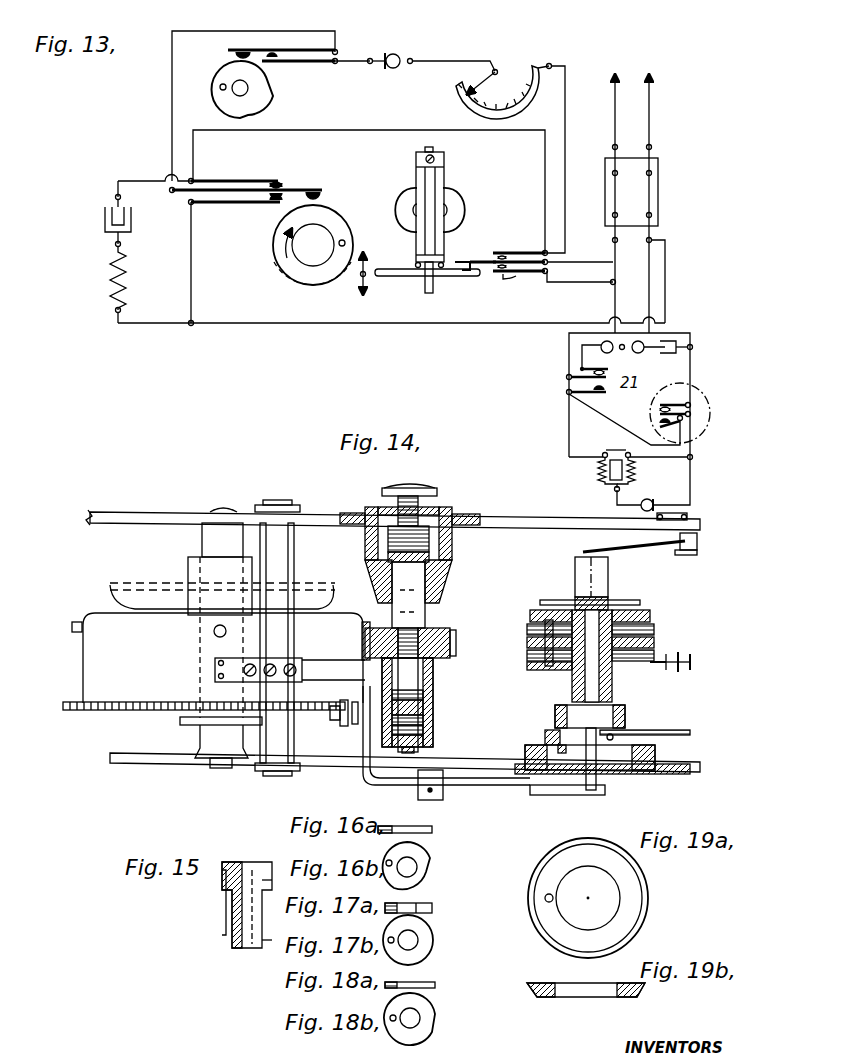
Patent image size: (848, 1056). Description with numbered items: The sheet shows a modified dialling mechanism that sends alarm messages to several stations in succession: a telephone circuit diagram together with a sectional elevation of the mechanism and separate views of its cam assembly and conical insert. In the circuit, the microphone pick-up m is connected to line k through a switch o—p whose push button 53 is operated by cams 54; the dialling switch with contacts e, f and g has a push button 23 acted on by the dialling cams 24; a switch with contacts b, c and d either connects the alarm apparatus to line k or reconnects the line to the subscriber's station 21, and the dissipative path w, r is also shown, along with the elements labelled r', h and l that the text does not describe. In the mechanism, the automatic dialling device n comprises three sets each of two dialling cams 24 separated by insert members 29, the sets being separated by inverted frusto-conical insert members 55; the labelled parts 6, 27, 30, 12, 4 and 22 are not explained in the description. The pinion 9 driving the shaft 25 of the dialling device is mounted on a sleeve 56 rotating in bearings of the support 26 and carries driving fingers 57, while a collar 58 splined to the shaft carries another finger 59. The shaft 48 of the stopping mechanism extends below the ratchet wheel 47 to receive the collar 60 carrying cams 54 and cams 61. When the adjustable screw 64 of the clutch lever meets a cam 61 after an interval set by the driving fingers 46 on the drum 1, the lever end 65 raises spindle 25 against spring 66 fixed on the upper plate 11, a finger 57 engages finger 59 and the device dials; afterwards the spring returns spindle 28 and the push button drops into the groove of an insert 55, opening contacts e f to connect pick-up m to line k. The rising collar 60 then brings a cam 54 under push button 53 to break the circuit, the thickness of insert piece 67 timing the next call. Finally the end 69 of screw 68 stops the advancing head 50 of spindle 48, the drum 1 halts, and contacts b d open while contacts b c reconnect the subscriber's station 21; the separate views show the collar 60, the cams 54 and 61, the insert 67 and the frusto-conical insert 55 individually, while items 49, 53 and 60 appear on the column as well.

In FIG. 14, the drum 1 is at (118, 630).
In FIG. 14, the rack 4 is at (62, 702).
In FIG. 14, the support 6 is at (690, 735).
In FIG. 14, the pinion 9 is at (675, 728).
In FIG. 14, the upper plate 11 is at (145, 497).
In FIG. 14, the bottom plate 12 is at (140, 765).
In FIG. 13, the subscriber's station 21 is at (466, 192).
In FIG. 13, the pivot link 22 is at (462, 278).
In FIG. 13, the push button 23 is at (318, 205).
In FIG. 14, the push button 23 is at (622, 686).
In FIG. 13, the dialling cams 24 is at (276, 282).
In FIG. 14, the dialling cams 24 is at (654, 643).
In FIG. 14, the shaft of the dialling device 25 is at (605, 598).
In FIG. 14, the support 26 is at (655, 757).
In FIG. 14, the lower plate 27 is at (560, 795).
In FIG. 14, the spindle 28 is at (650, 614).
In FIG. 14, the insert members 29 is at (654, 657).
In FIG. 14, the insulating disc 30 is at (654, 630).
In FIG. 14, the driving fingers 46 is at (74, 634).
In FIG. 14, the ratchet wheel 47 is at (450, 642).
In FIG. 14, the shaft of the stopping mechanism 48 is at (425, 610).
In FIG. 14, the washer 49 is at (440, 568).
In FIG. 14, the advancing head 50 is at (430, 545).
In FIG. 13, the push button 53 is at (225, 56).
In FIG. 14, the push button 53 is at (420, 640).
In FIG. 13, the cams 54 is at (250, 112).
In FIG. 14, the cams 54 is at (423, 695).
In FIG. 16A, the cams 54 is at (405, 829).
In FIG. 16B, the cams 54 is at (418, 843).
In FIG. 14, the frusto-conical insert members 55 is at (530, 630).
In FIG. 19A, the frusto-conical insert members 55 is at (628, 898).
In FIG. 19B, the frusto-conical insert members 55 is at (640, 983).
In FIG. 14, the sleeve 56 is at (625, 714).
In FIG. 14, the driving fingers 57 is at (545, 735).
In FIG. 14, the collar 58 is at (596, 760).
In FIG. 14, the driving finger 59 is at (556, 748).
In FIG. 14, the collar 60 is at (433, 662).
In FIG. 15, the collar 60 is at (262, 858).
In FIG. 14, the cams 61 is at (423, 707).
In FIG. 18A, the cams 61 is at (410, 985).
In FIG. 18B, the cams 61 is at (420, 997).
In FIG. 14, the adjustable screw 64 is at (344, 727).
In FIG. 14, the end of the lever 65 is at (585, 795).
In FIG. 14, the spring 66 is at (605, 543).
In FIG. 14, the insert piece 67 is at (423, 720).
In FIG. 17A, the insert piece 67 is at (408, 908).
In FIG. 17B, the insert piece 67 is at (420, 918).
In FIG. 14, the screw 68 is at (405, 486).
In FIG. 14, the end of the screw 69 is at (452, 514).
In FIG. 13, the switch contact p is at (283, 52).
In FIG. 14, the switch contact p is at (217, 663).
In FIG. 13, the switch contact o is at (268, 64).
In FIG. 14, the switch contact o is at (217, 676).
In FIG. 13, the microphone pick-up m is at (393, 68).
In FIG. 13, the rheostat r' is at (488, 157).
In FIG. 13, the switch contact e is at (276, 180).
In FIG. 14, the switch contact e is at (690, 672).
In FIG. 13, the switch contact f is at (286, 194).
In FIG. 14, the switch contact f is at (678, 674).
In FIG. 13, the switch contact g is at (262, 205).
In FIG. 14, the switch contact g is at (660, 670).
In FIG. 13, the automatic dialling device n is at (338, 214).
In FIG. 14, the automatic dialling device n is at (622, 679).
In FIG. 13, the dissipative path w is at (103, 219).
In FIG. 13, the dissipative path r is at (96, 283).
In FIG. 13, the bar h is at (395, 278).
In FIG. 13, the switch contact b is at (480, 260).
In FIG. 13, the switch contact c is at (509, 284).
In FIG. 13, the switch contact d is at (505, 250).
In FIG. 13, the line k is at (631, 178).
In FIG. 13, the line l is at (391, 310).